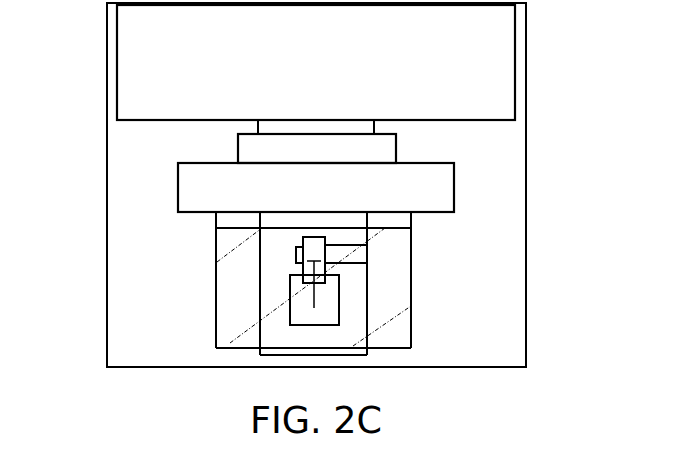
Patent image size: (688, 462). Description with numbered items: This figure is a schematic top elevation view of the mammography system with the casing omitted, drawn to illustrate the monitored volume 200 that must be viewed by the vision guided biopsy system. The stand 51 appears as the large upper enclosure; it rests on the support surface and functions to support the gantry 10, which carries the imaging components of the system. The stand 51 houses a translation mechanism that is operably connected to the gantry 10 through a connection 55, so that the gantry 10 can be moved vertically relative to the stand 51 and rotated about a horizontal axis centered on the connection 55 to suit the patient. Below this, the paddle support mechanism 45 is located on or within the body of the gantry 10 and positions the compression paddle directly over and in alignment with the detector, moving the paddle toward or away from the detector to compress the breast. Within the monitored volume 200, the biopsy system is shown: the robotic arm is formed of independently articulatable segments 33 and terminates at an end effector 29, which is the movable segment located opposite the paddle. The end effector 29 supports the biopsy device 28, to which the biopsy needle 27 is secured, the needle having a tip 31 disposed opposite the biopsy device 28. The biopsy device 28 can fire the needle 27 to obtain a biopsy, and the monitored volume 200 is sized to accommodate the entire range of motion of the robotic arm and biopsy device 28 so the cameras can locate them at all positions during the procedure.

The gantry 10 is at (396, 147).
The stand 51 is at (117, 49).
The connection 55 is at (258, 128).
The paddle support mechanism 45 is at (178, 190).
The monitored volume 200 is at (411, 257).
The biopsy device 28 is at (367, 292).
The segment 33 is at (356, 264).
The end effector 29 is at (297, 250).
The biopsy needle 27 is at (290, 292).
The tip 31 is at (290, 321).